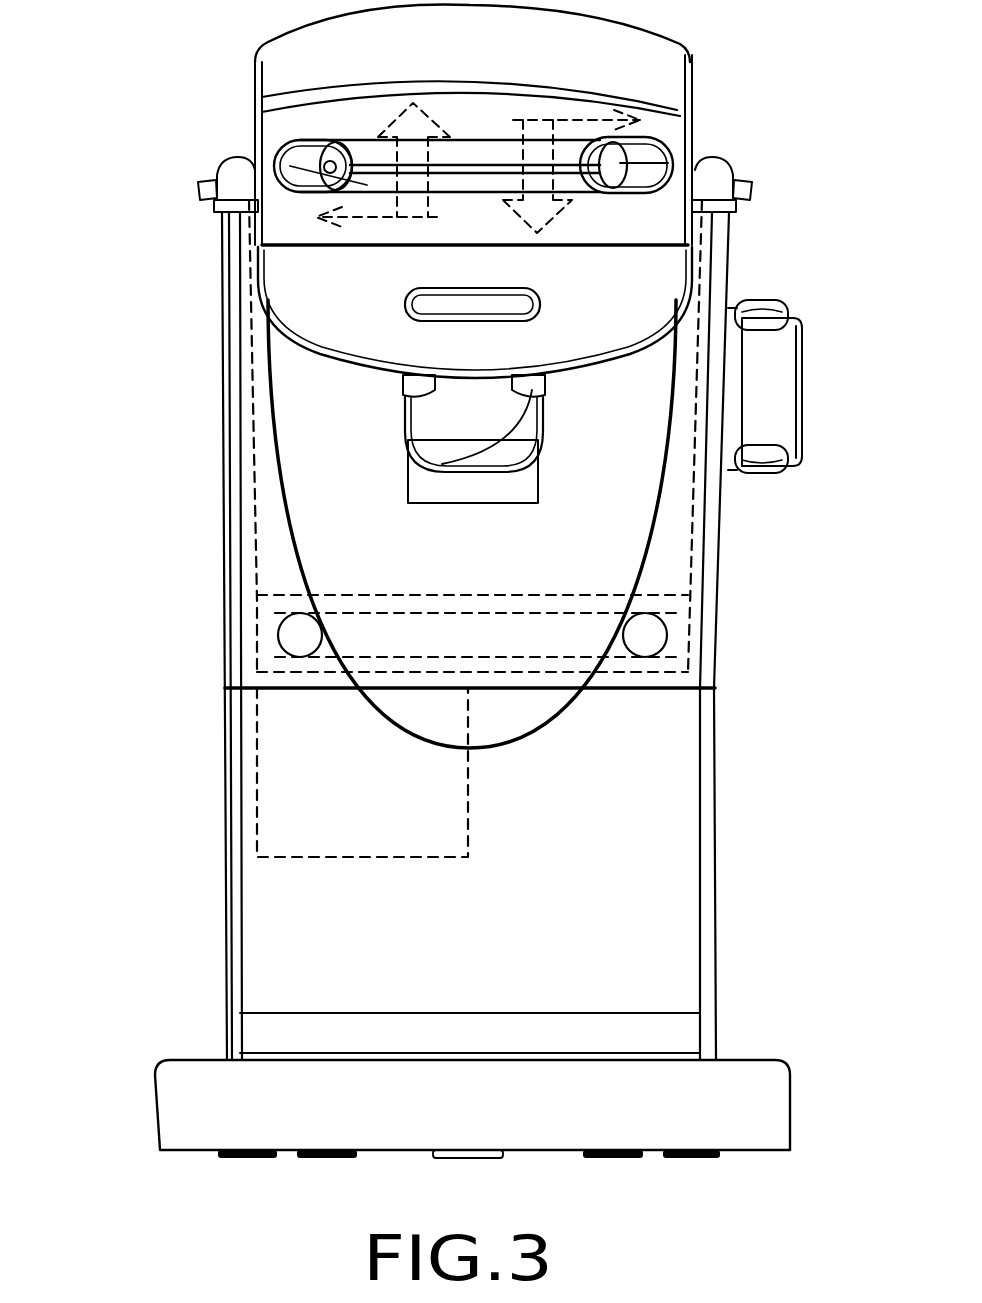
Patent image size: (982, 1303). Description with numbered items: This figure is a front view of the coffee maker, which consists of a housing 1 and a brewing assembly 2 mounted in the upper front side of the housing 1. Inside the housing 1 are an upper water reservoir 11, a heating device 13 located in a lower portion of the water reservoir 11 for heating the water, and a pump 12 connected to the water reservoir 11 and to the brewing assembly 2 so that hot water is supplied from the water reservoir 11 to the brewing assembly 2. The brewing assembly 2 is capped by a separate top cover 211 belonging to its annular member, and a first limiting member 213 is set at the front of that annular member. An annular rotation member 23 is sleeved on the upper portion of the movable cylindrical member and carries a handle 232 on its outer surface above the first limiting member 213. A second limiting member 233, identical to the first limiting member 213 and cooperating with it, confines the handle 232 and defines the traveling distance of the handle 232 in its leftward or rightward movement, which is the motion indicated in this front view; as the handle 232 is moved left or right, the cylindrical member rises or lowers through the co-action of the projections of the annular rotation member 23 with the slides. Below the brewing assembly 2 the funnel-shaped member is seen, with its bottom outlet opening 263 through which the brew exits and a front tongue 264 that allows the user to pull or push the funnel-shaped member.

The housing 1 is at (122, 533).
The water reservoir 11 is at (348, 545).
The pump 12 is at (315, 788).
The heating device 13 is at (348, 634).
The brewing assembly 2 is at (118, 415).
The top cover 211 is at (343, 43).
The first limiting member 213 is at (275, 168).
The annular rotation member 23 is at (607, 137).
The handle 232 is at (680, 156).
The second limiting member 233 is at (377, 147).
The outlet opening 263 is at (413, 383).
The front tongue 264 is at (302, 292).